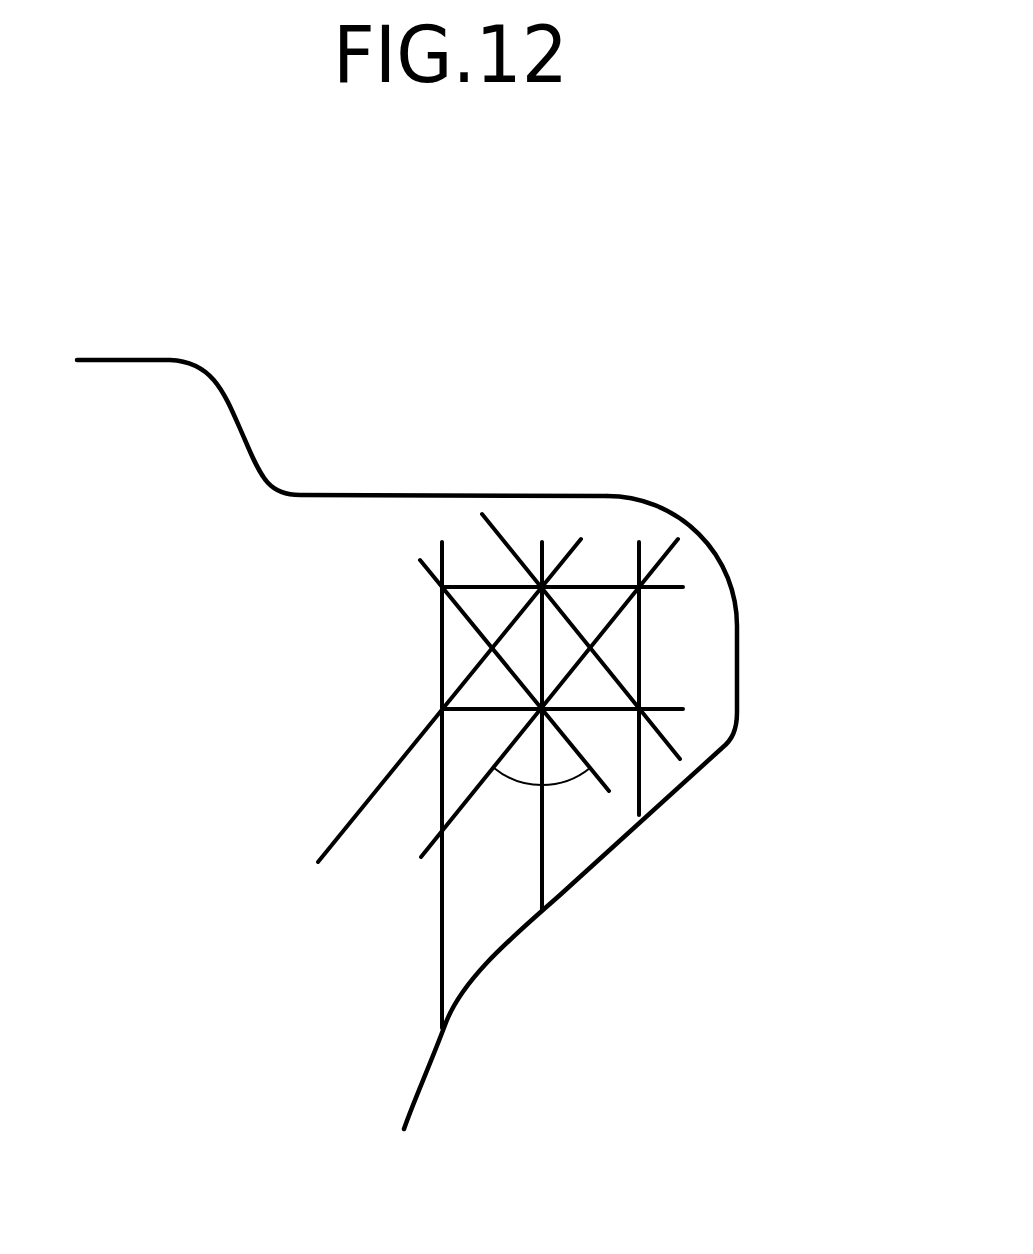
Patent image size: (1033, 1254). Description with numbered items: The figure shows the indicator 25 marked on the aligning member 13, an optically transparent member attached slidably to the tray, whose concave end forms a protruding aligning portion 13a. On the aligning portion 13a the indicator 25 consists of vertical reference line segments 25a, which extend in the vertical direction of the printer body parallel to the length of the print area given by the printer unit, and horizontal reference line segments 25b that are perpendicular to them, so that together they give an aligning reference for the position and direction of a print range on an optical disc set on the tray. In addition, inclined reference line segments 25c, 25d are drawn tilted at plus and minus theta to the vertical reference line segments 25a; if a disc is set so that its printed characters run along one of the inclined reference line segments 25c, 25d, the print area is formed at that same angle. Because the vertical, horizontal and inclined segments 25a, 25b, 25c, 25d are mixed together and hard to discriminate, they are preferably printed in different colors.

The aligning member 13 is at (182, 418).
The aligning portion 13a is at (692, 633).
The indicator 25 is at (496, 709).
The vertical reference straight line segment 25a is at (442, 650).
The horizontal reference straight line segment 25b is at (475, 583).
The inclined reference line segment 25c is at (477, 785).
The inclined reference line segment 25d is at (575, 747).